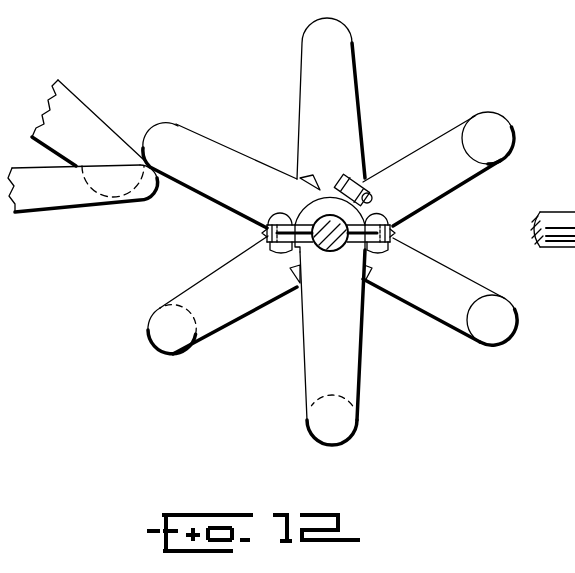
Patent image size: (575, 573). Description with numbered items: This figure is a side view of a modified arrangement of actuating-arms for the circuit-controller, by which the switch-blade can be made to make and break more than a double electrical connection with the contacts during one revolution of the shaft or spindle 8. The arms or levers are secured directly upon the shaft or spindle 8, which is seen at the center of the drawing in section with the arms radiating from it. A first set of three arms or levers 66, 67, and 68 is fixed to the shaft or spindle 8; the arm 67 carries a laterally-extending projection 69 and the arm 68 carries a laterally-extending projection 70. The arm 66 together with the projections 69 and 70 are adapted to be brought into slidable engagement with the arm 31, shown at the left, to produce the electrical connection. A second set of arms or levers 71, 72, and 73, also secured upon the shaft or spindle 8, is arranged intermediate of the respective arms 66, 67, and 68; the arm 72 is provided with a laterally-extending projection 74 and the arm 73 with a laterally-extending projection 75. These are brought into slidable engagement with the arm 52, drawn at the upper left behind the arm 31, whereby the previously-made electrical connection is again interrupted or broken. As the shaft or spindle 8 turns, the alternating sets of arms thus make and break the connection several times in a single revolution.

The shaft or spindle 8 is at (333, 254).
The arm 31 is at (87, 195).
The arm 52 is at (92, 118).
The arm or lever 66 is at (207, 145).
The arm or lever 67 is at (332, 335).
The arm or lever 68 is at (432, 171).
The laterally-extending projection 69 is at (348, 398).
The laterally-extending projection 70 is at (502, 125).
The arm or lever 71 is at (348, 67).
The arm or lever 72 is at (432, 268).
The arm or lever 73 is at (246, 307).
The laterally-extending projection 74 is at (505, 318).
The laterally-extending projection 75 is at (207, 342).